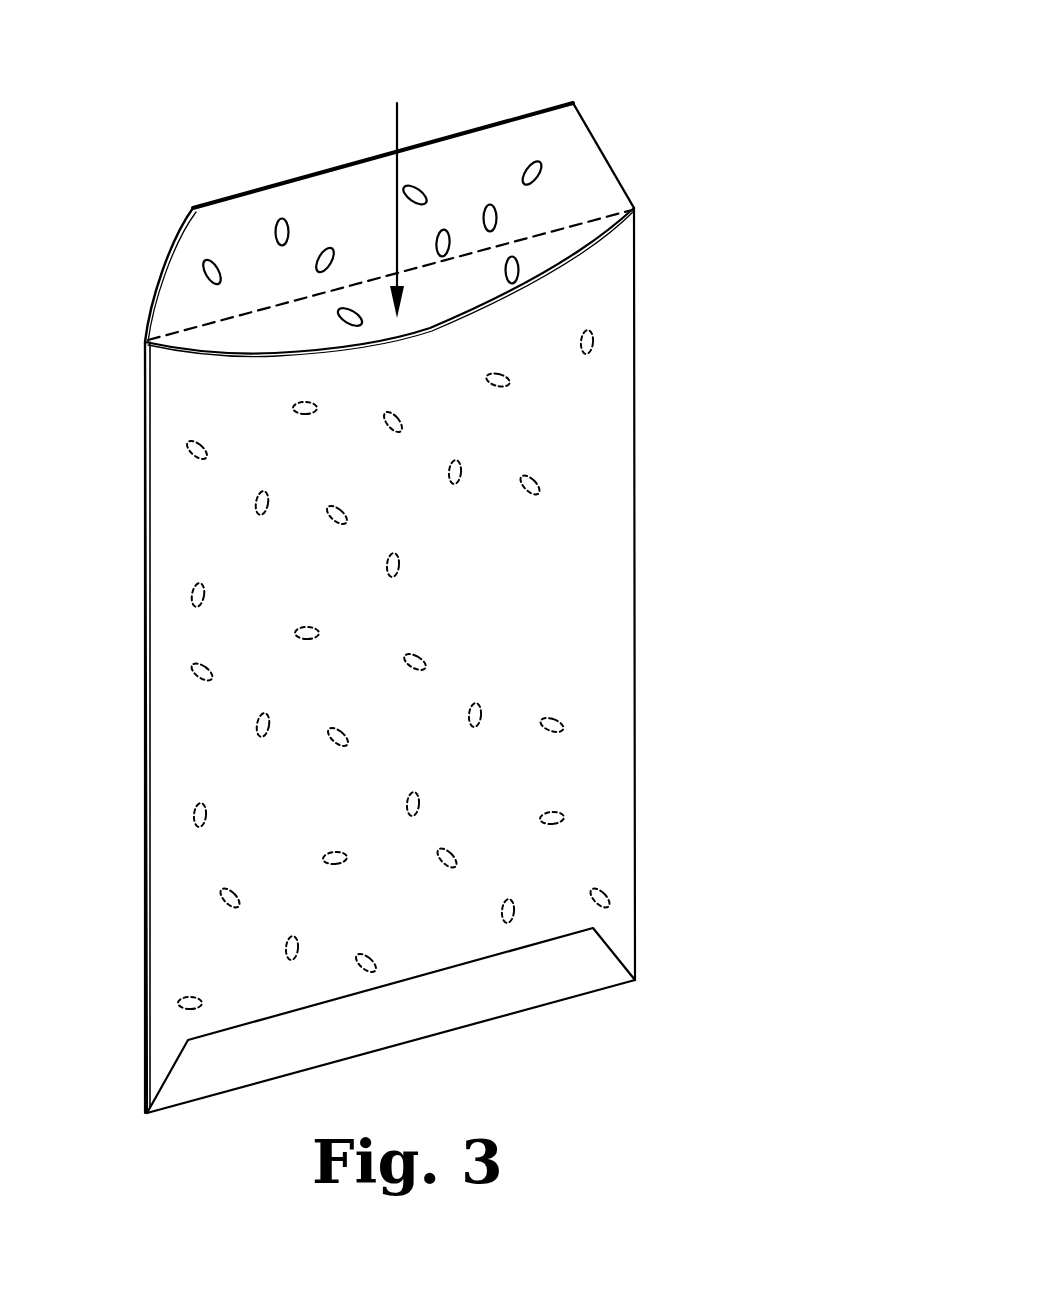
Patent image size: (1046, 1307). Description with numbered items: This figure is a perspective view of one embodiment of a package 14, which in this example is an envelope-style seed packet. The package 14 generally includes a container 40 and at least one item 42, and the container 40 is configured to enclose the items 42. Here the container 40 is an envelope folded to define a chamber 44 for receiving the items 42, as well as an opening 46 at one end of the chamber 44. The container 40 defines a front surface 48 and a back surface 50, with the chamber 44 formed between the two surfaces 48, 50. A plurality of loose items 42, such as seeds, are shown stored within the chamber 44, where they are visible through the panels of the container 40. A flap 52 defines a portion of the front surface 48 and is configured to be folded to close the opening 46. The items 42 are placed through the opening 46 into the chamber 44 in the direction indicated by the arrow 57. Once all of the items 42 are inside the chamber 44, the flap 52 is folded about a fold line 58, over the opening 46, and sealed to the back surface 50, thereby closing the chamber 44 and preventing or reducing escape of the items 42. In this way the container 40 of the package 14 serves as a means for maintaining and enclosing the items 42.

The package 14 is at (667, 80).
The container 40 is at (600, 598).
The item 42 is at (340, 314).
The chamber 44 is at (563, 512).
The opening 46 is at (556, 251).
The front surface 48 is at (147, 847).
The back surface 50 is at (223, 927).
The flap 52 is at (594, 168).
The arrow 57 is at (400, 125).
The fold line 58 is at (634, 215).